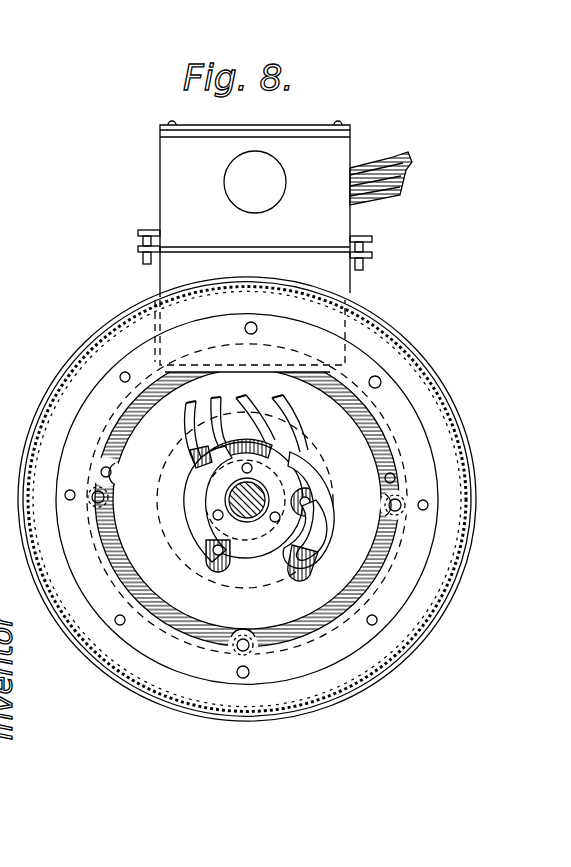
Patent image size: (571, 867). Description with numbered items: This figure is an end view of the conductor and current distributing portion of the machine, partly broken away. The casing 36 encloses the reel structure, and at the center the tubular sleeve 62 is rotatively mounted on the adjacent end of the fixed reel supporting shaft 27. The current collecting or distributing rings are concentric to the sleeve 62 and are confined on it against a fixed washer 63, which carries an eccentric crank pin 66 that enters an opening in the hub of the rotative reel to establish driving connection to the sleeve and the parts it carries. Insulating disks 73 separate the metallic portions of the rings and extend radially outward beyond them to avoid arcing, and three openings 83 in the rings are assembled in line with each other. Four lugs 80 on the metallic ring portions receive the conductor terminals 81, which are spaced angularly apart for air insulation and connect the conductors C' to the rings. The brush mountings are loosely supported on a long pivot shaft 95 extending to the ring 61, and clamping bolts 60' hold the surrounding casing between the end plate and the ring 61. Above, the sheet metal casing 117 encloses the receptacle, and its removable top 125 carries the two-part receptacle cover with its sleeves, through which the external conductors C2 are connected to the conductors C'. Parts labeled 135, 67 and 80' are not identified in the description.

The casing top 125 is at (163, 188).
The housing opening 135 is at (243, 180).
The external conductors C2 is at (380, 190).
The sheet metal casing 117 is at (360, 263).
The casing 36 is at (386, 342).
The ring 61 is at (432, 463).
The insulating disks 73 is at (385, 545).
The pivot shaft 95 is at (104, 470).
The clamping bolts 60' is at (265, 578).
The fixed washer 63 is at (259, 540).
The tubular shaft 62 is at (246, 522).
The reel supporting shaft 27 is at (240, 500).
The bearing block 67 is at (237, 440).
The crank pin 66 is at (253, 468).
The conductors C' is at (247, 401).
The conductor terminals 81 is at (200, 532).
The lugs 80 is at (256, 570).
The brush arm end 80' is at (173, 464).
The openings 83 is at (293, 461).